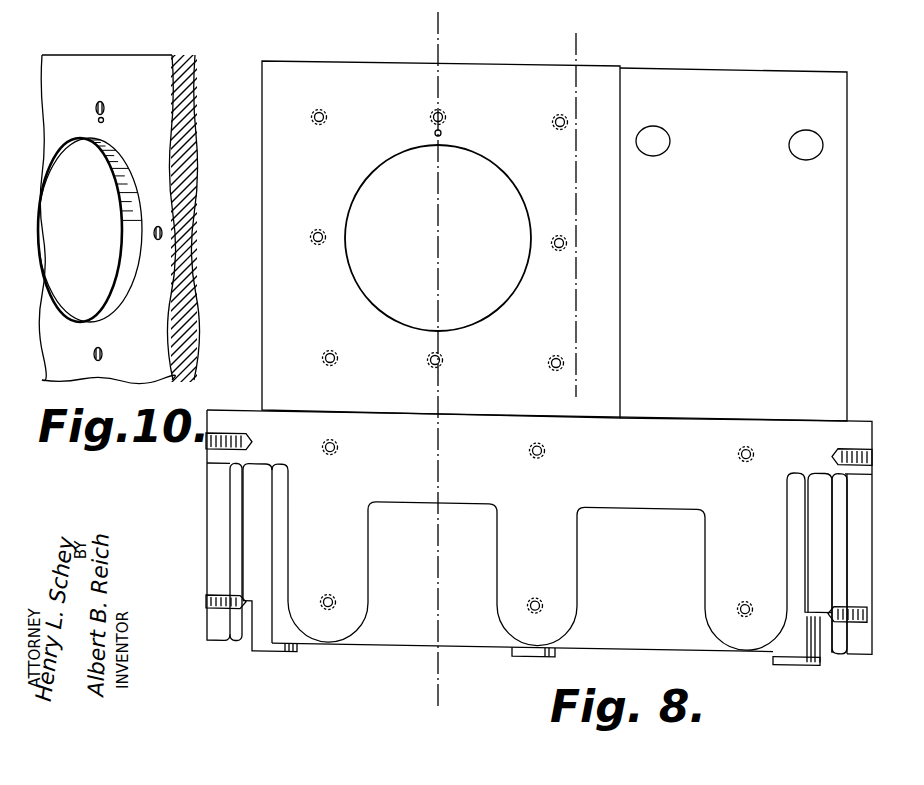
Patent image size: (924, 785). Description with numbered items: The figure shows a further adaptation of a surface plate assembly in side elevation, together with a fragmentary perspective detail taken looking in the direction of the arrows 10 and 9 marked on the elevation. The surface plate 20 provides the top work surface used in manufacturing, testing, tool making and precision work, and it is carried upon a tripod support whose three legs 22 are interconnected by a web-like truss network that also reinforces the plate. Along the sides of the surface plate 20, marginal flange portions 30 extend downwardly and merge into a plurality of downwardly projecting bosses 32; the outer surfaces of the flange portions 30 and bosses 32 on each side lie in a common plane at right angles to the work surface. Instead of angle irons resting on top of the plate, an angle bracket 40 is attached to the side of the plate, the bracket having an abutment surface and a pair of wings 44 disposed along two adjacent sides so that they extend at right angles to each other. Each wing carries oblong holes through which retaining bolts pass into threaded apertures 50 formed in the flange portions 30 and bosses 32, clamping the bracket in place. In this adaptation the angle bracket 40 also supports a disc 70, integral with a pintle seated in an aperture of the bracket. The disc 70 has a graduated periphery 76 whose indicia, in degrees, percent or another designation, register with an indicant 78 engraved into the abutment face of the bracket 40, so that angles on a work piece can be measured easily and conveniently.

In FIG. 8, the section line 9- 9 is at (437, 30).
In FIG. 8, the direction arrows 10 is at (577, 44).
In FIG. 8, the surface plate 20 is at (855, 427).
In FIG. 8, the legs 22 is at (282, 645).
In FIG. 8, the marginal flange portions 30 is at (411, 493).
In FIG. 8, the downwardly projecting bosses 32 is at (212, 548).
In FIG. 10, the angle bracket 40 is at (192, 98).
In FIG. 8, the angle bracket 40 is at (472, 73).
In FIG. 8, the wings 44 is at (700, 70).
In FIG. 8, the threaded apertures 50 is at (549, 443).
In FIG. 8, the disc 70 is at (482, 172).
In FIG. 10, the graduated periphery 76 is at (130, 173).
In FIG. 10, the indicant 78 is at (101, 136).